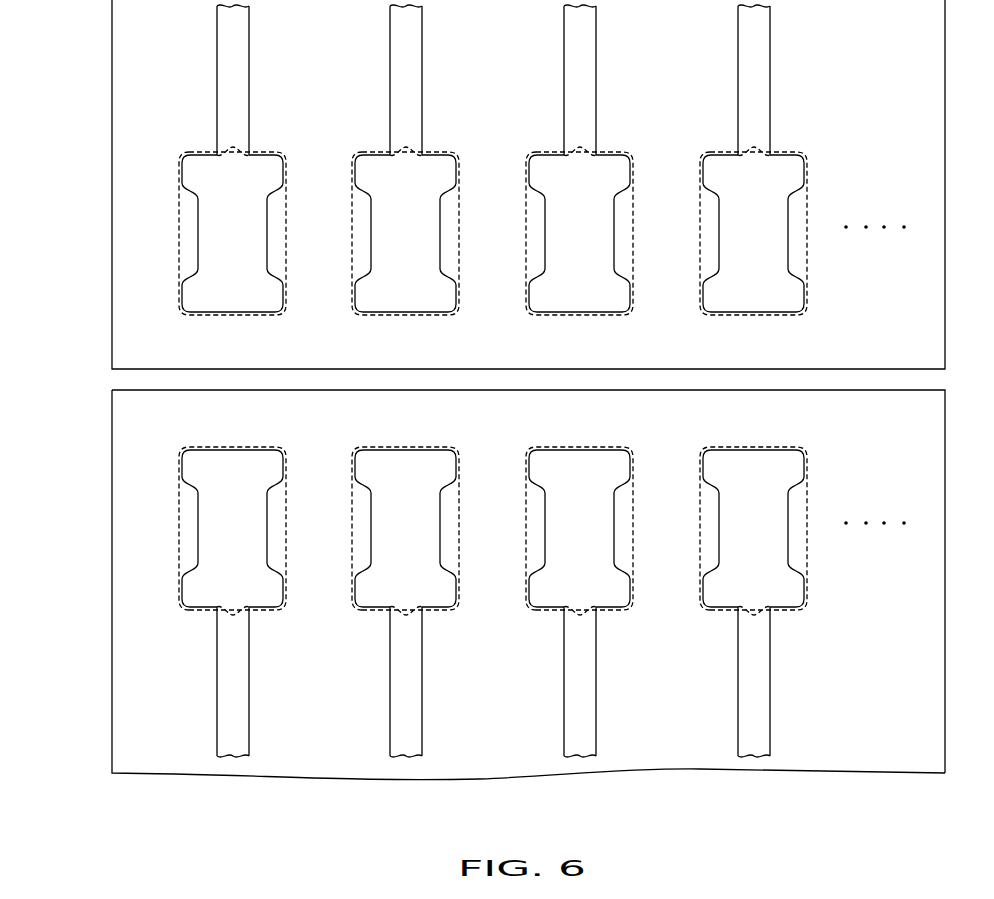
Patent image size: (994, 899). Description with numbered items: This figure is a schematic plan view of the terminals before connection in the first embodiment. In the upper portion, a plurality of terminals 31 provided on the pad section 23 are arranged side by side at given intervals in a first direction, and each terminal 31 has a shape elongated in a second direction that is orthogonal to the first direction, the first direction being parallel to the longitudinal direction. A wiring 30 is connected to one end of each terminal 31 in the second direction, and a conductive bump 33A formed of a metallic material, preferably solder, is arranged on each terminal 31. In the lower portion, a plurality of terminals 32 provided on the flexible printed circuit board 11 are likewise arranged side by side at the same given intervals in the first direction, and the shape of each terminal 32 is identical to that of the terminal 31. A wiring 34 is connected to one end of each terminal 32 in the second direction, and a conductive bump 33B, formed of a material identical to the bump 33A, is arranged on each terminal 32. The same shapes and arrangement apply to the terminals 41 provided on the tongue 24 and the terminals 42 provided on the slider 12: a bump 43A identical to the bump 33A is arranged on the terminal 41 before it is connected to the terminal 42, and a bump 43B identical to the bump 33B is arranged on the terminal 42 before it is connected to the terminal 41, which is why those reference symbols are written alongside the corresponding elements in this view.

The flexible printed circuit board 11 is at (489, 585).
The slider 12 is at (112, 601).
The pad section 23 is at (489, 184).
The tongue 24 is at (112, 103).
The wiring 30 is at (217, 42).
The terminal 31 is at (468, 209).
The terminal 32 is at (469, 552).
The bump 33A is at (503, 196).
The bump 33B is at (504, 566).
The wiring 34 is at (217, 716).
The terminal 41 is at (200, 154).
The terminal 42 is at (200, 608).
The bump 43A is at (267, 152).
The bump 43B is at (267, 610).